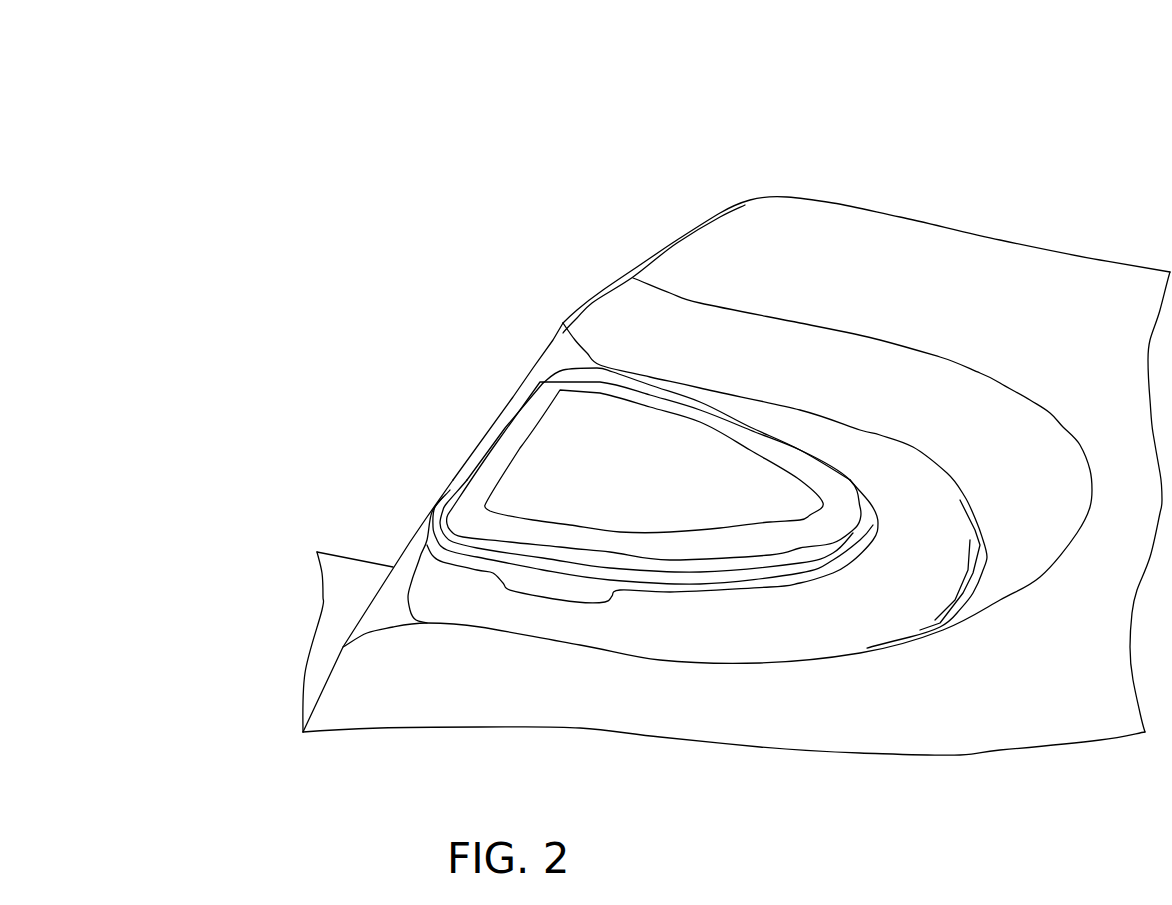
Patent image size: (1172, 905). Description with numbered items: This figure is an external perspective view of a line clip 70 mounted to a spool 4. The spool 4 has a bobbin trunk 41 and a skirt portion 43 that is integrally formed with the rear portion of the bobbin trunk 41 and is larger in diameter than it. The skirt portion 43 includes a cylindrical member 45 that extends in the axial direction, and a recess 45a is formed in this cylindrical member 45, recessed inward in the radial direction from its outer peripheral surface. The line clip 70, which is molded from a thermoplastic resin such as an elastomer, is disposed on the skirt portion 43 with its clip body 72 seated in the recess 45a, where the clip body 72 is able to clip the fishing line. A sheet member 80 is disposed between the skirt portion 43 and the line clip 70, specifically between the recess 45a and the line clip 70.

The spool 4 is at (695, 138).
The bobbin trunk 41 is at (340, 590).
The skirt portion 43 is at (1033, 210).
The cylindrical member 45 is at (908, 240).
The recess 45a is at (553, 357).
The line clip 70 is at (447, 447).
The clip body 72 is at (470, 505).
The sheet member 80 is at (780, 637).